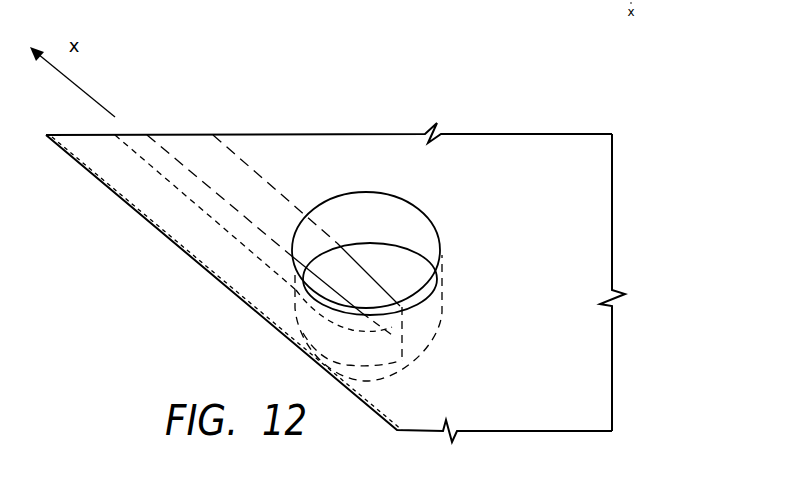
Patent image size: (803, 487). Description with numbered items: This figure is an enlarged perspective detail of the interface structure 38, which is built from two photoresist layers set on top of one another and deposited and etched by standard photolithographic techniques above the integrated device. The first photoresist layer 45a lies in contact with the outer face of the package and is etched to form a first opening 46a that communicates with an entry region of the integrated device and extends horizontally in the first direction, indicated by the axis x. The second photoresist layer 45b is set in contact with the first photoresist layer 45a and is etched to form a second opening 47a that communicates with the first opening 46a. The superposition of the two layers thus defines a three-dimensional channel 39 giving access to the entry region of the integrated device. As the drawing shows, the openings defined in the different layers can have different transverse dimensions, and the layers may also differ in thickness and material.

The interface structure 38 is at (184, 100).
The first channel 39 is at (263, 188).
The first photoresist layer 45a is at (200, 240).
The second photoresist layer 45b is at (578, 180).
The first opening 46a is at (350, 271).
The second opening 47a is at (398, 229).